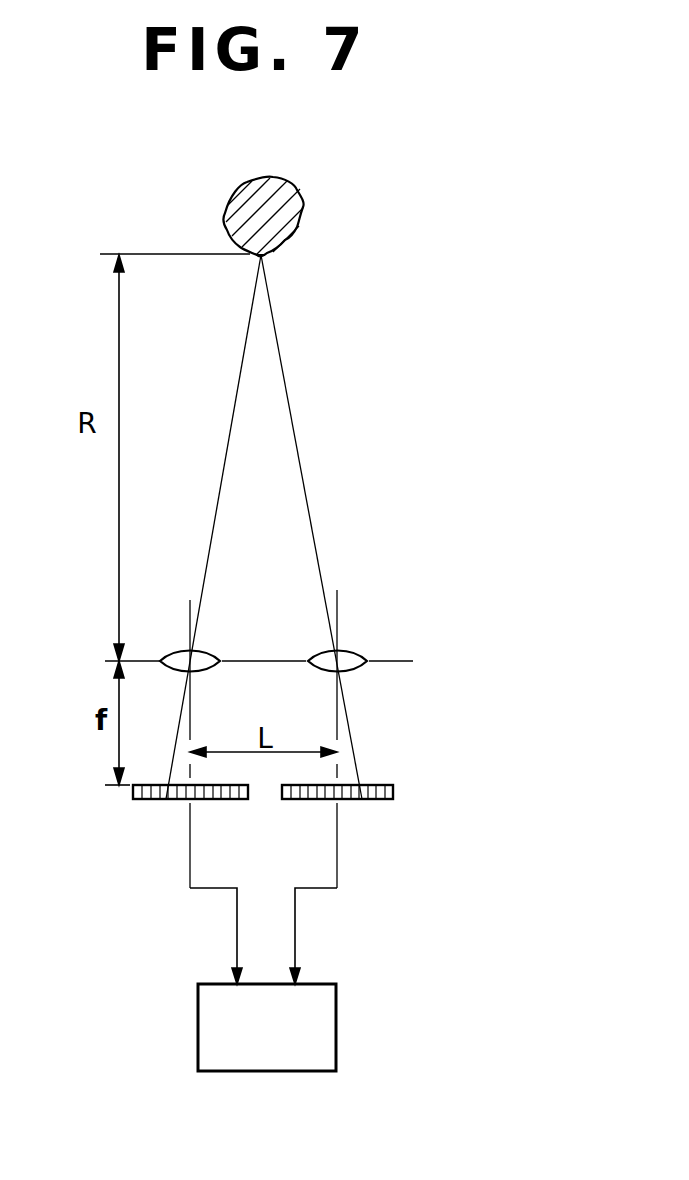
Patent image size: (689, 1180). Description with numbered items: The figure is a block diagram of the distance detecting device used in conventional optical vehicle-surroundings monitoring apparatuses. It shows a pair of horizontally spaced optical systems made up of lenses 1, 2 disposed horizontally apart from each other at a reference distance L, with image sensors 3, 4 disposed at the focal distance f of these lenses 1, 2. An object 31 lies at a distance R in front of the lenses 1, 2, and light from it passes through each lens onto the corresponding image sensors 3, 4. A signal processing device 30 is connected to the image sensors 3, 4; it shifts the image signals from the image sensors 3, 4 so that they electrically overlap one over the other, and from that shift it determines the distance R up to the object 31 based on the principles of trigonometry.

The object 31 is at (303, 197).
The lens 1 is at (200, 650).
The lens 2 is at (342, 650).
The image sensor 3 is at (166, 800).
The image sensor 4 is at (362, 800).
The signal processing device 30 is at (336, 1023).